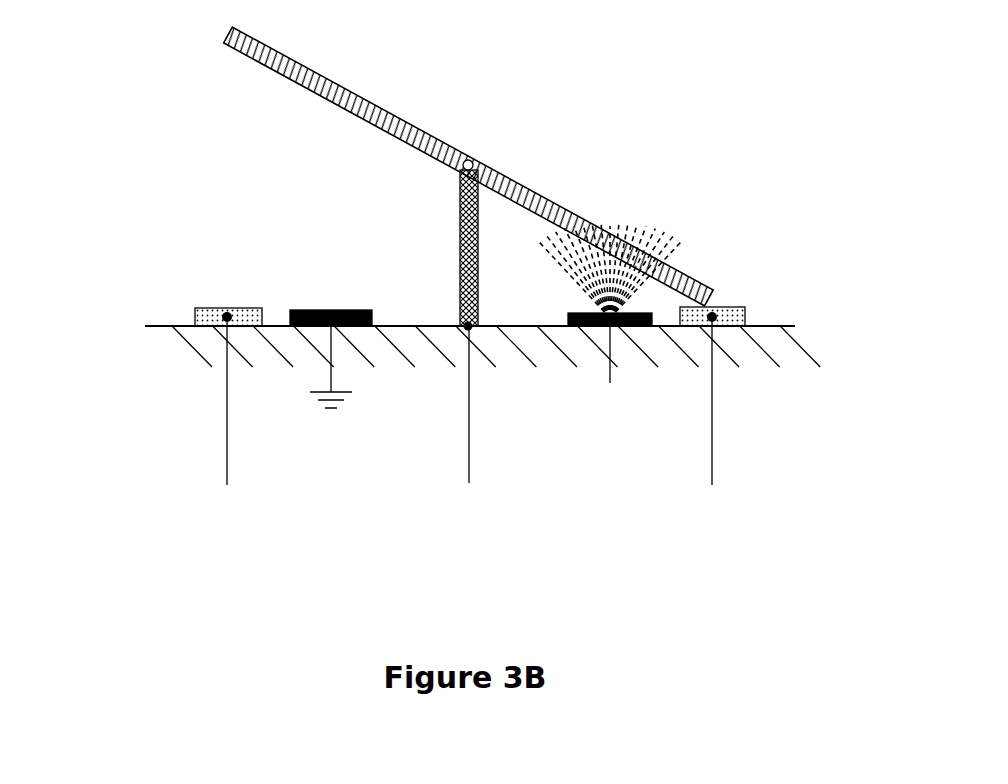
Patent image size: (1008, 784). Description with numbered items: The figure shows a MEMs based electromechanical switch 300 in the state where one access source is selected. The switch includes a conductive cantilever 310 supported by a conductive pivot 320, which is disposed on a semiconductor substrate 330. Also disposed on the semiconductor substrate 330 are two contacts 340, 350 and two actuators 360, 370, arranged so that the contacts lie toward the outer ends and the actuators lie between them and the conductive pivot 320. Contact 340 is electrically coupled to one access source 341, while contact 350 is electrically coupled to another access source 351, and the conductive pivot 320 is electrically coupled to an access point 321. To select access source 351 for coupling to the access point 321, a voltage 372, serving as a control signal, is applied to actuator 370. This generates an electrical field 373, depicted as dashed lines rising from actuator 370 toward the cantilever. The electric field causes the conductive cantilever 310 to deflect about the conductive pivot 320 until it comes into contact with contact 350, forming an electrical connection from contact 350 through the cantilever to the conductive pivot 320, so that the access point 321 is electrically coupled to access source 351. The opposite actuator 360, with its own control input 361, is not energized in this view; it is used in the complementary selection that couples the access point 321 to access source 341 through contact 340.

The MEMs based electromechanical switch 300 is at (597, 137).
The conductive cantilever 310 is at (403, 120).
The conductive pivot 320 is at (462, 245).
The access point 321 is at (485, 553).
The semiconductor substrate 330 is at (180, 346).
The contact 340 is at (217, 307).
The access source 341 is at (172, 525).
The contact 350 is at (725, 302).
The access source 351 is at (760, 513).
The actuator 360 is at (350, 310).
The control B 361 is at (293, 438).
The actuator 370 is at (580, 310).
The voltage 372 is at (650, 437).
The electrical field 373 is at (655, 227).